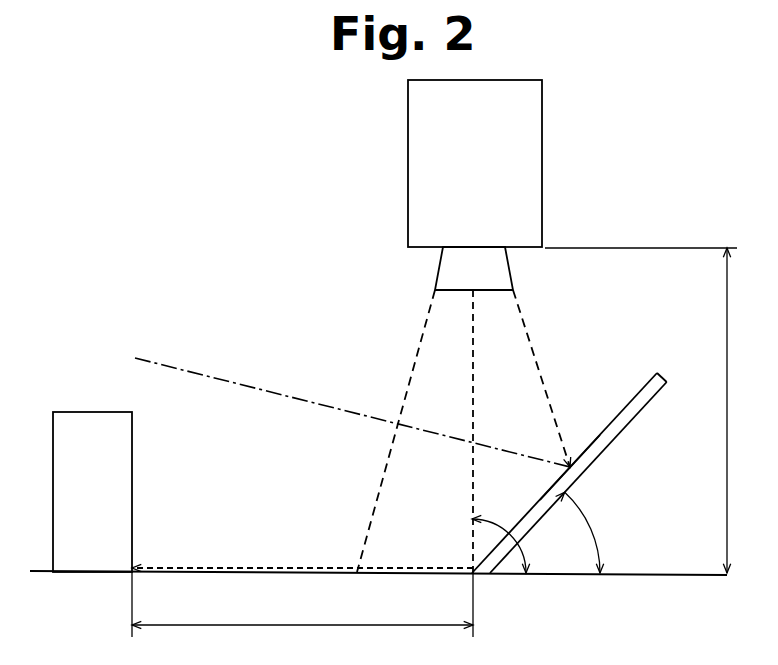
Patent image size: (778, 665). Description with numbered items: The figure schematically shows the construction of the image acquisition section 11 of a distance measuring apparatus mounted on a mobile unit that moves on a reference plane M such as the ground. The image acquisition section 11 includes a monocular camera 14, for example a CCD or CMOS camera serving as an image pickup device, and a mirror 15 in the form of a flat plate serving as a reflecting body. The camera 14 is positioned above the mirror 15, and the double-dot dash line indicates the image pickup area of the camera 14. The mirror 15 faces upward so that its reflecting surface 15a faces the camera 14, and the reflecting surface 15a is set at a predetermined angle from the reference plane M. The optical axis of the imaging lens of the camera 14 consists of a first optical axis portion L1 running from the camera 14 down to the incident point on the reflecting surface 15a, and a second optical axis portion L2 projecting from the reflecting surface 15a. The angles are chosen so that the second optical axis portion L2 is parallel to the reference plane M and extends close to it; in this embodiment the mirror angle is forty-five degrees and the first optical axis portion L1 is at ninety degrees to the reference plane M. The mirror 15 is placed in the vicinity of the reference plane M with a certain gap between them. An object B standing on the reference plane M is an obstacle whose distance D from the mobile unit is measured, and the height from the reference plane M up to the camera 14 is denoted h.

The image acquisition section 11 is at (408, 182).
The monocular camera 14 is at (542, 169).
The mirror 15 is at (662, 378).
The reflecting surface 15a is at (627, 405).
The object B is at (132, 465).
The reference plane M is at (673, 574).
The first optical axis portion L1 is at (474, 386).
The second optical axis portion L2 is at (252, 565).
The distance D is at (302, 604).
The distance from the reference plane to the camera h is at (650, 410).